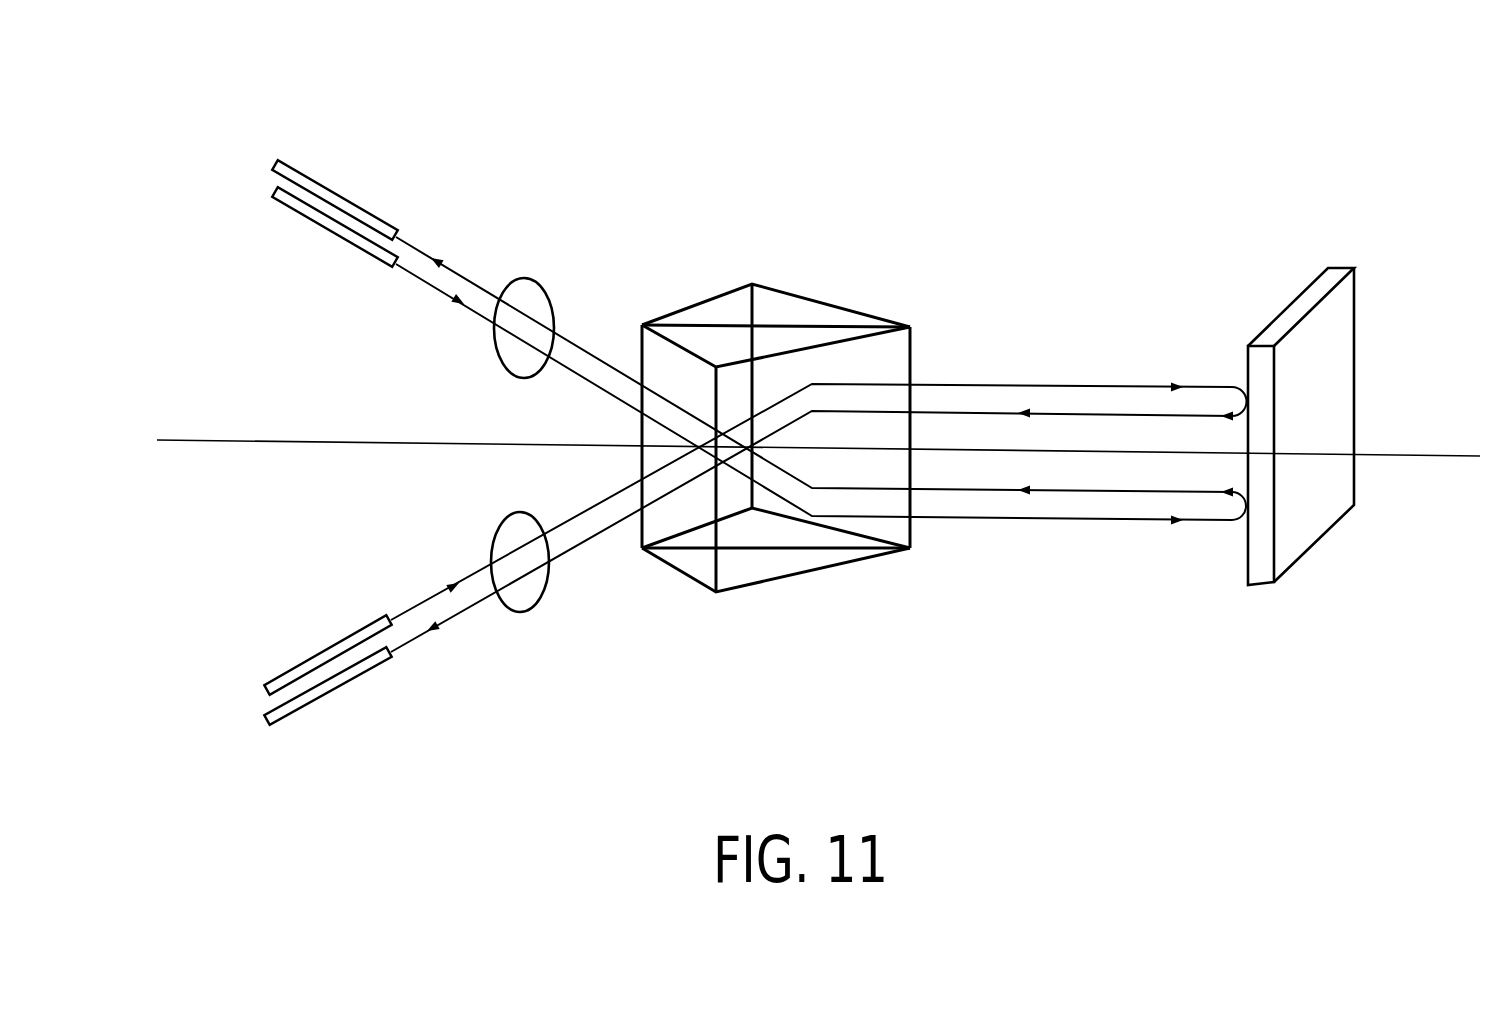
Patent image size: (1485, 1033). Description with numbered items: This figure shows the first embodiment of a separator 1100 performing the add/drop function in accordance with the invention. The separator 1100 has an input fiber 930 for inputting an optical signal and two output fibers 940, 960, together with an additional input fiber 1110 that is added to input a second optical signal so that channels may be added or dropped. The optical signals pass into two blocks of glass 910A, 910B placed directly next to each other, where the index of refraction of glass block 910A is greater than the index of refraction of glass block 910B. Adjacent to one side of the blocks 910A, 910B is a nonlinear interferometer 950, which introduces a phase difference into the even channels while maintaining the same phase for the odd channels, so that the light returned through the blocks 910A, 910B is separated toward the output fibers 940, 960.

The separator performing the add/drop function 1100 is at (921, 163).
The output fiber 960 is at (357, 201).
The additional input fiber 1110 is at (354, 252).
The input fiber 930 is at (352, 632).
The output fiber 940 is at (365, 675).
The glass block 910A is at (807, 293).
The glass block 910B is at (798, 574).
The nonlinear interferometer 950 is at (1346, 267).